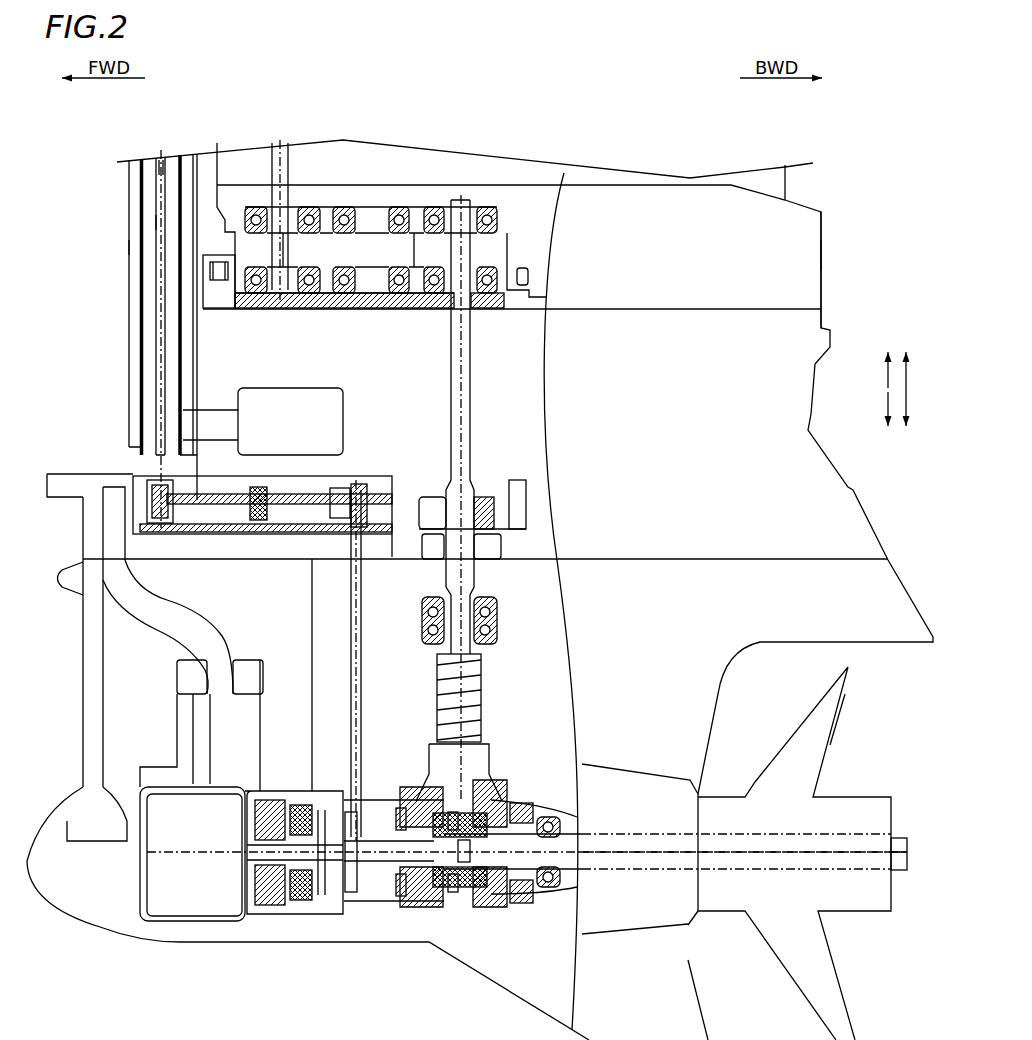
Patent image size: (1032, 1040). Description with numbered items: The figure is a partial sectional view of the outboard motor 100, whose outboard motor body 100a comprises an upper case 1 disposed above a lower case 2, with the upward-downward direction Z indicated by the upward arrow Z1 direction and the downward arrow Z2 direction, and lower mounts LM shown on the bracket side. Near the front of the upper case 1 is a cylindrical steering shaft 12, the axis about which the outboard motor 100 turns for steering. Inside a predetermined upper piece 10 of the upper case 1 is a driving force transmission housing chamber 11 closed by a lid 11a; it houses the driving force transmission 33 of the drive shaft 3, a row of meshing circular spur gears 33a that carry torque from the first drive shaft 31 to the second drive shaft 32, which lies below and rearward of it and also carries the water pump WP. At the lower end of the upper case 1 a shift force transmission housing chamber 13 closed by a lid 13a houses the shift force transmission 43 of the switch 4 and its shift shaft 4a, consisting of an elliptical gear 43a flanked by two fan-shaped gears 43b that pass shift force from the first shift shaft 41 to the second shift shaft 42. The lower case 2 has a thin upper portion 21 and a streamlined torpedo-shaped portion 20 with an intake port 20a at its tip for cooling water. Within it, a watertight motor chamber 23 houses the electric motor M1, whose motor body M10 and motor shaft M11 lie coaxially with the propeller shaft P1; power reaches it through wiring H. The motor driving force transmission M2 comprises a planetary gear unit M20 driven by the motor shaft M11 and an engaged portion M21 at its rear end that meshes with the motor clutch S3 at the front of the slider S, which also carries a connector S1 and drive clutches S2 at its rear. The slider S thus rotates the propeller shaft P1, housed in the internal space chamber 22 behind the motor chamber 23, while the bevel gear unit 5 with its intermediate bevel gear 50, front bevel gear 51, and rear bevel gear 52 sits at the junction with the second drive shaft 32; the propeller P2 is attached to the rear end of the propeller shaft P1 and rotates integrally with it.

The upper case 1 is at (834, 256).
The lower case 2 is at (736, 679).
The drive shaft 3 is at (285, 136).
The switch 4 is at (156, 140).
The shift shaft 4a is at (161, 142).
The bevel gear unit 5 is at (493, 777).
The predetermined upper piece 10 is at (824, 295).
The driving force transmission housing chamber 11 is at (242, 294).
The lid 11a is at (300, 302).
The steering shaft 12 is at (140, 246).
The shift force transmission housing chamber 13 is at (180, 532).
The lid 13a is at (226, 532).
The torpedo-shaped portion 20 is at (48, 826).
The intake port 20a is at (78, 826).
The upper portion 21 is at (83, 660).
The internal space chamber 22 is at (470, 905).
The motor chamber 23 is at (214, 915).
The first drive shaft 31 is at (290, 158).
The second drive shaft 32 is at (472, 422).
The driving force transmission 33 is at (520, 236).
The spur gear 33a is at (267, 207).
The first shift shaft 41 is at (154, 222).
The second shift shaft 42 is at (364, 684).
The shift force transmission 43 is at (374, 487).
The elliptical gear 43a is at (282, 487).
The fan-shaped gear 43b is at (212, 487).
The intermediate bevel gear 50 is at (495, 793).
The front bevel gear 51 is at (416, 908).
The rear bevel gear 52 is at (505, 905).
The outboard motor 100 is at (848, 145).
The outboard motor body 100a is at (833, 228).
The wiring H is at (212, 624).
The lower mount LM is at (345, 406).
The electric motor M1 is at (64, 912).
The motor body M10 is at (245, 857).
The motor shaft M11 is at (185, 912).
The motor driving force transmission M2 is at (338, 984).
The planetary gear unit M20 is at (280, 918).
The engaged portion M21 is at (340, 915).
The propeller shaft P1 is at (703, 920).
The propeller P2 is at (858, 900).
The slider S is at (467, 897).
The connector S1 is at (452, 905).
The drive clutch S2 is at (438, 905).
The motor clutch S3 is at (352, 902).
The water pump WP is at (540, 500).
The upward-downward direction Z is at (919, 389).
The arrow Z1 direction Z1 is at (871, 370).
The arrow Z2 direction Z2 is at (871, 409).